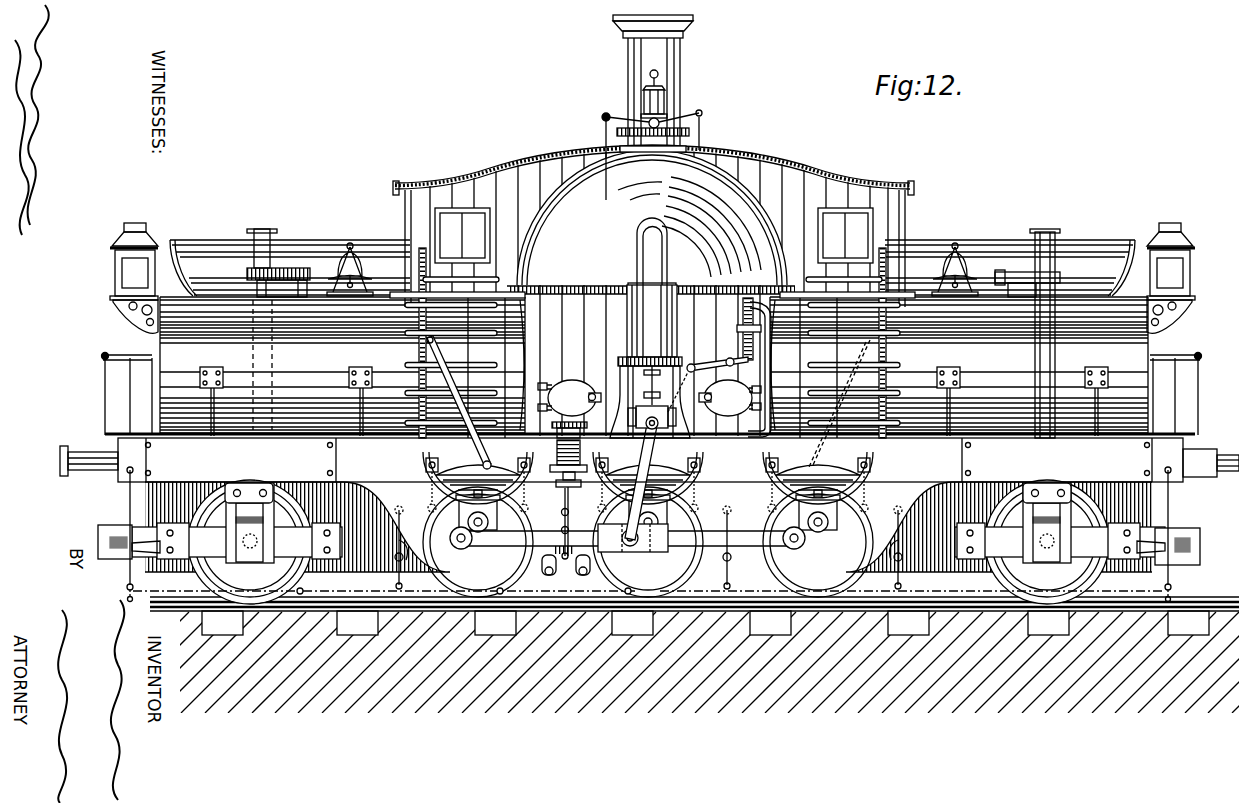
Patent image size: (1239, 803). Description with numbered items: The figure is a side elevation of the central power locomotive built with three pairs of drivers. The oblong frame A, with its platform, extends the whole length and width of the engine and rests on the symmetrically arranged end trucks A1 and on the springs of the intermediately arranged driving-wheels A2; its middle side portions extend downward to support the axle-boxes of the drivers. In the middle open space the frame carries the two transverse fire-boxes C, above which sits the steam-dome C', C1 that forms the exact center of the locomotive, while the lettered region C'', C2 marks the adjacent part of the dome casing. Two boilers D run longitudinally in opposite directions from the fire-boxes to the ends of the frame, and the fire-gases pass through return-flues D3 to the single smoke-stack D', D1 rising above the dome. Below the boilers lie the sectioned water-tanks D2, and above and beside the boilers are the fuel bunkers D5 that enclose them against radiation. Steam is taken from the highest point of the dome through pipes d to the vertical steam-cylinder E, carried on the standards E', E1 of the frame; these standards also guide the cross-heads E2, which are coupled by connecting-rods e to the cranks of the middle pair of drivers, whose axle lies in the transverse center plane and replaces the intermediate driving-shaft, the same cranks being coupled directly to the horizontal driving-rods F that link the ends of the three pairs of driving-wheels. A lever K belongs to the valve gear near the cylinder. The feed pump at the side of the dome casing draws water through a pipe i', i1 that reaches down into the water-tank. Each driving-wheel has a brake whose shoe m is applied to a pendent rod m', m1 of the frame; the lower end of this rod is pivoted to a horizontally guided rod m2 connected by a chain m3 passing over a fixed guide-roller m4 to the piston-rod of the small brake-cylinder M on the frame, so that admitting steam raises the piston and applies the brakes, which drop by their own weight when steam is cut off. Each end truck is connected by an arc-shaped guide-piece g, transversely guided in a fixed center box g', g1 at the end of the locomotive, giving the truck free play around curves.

The frame A is at (649, 458).
The end truck A1 is at (1047, 542).
The driving-wheels A2 is at (648, 542).
The fire-boxes C is at (649, 378).
The steam-dome C' is at (652, 217).
The steam-dome C1 is at (652, 217).
The dome right half C'' is at (711, 227).
The dome right half C2 is at (711, 227).
The boilers D is at (654, 338).
The smoke-stack D' is at (656, 107).
The smoke-stack D1 is at (680, 82).
The water-tanks D2 is at (648, 527).
The return-flues D3 is at (283, 236).
The fuel bunkers D5 is at (960, 236).
The steam pipes d is at (642, 262).
The steam-cylinder E is at (650, 361).
The standards E' is at (650, 389).
The standards E1 is at (650, 389).
The cross-heads E2 is at (668, 418).
The lever K is at (714, 355).
The pipe i' is at (767, 369).
The pipe i1 is at (767, 369).
The brake-cylinder M is at (574, 489).
The connecting-rods e is at (641, 482).
The driving-rods F is at (627, 532).
The brake shoe m is at (648, 552).
The pendent brake-rod m' is at (647, 547).
The pendent brake-rod m1 is at (647, 547).
The horizontally-guided rod m2 is at (649, 591).
The chain m3 is at (567, 575).
The guide-roller m4 is at (577, 523).
The arc-shaped guide-piece g is at (648, 544).
The center box g' is at (652, 534).
The center box g1 is at (652, 534).